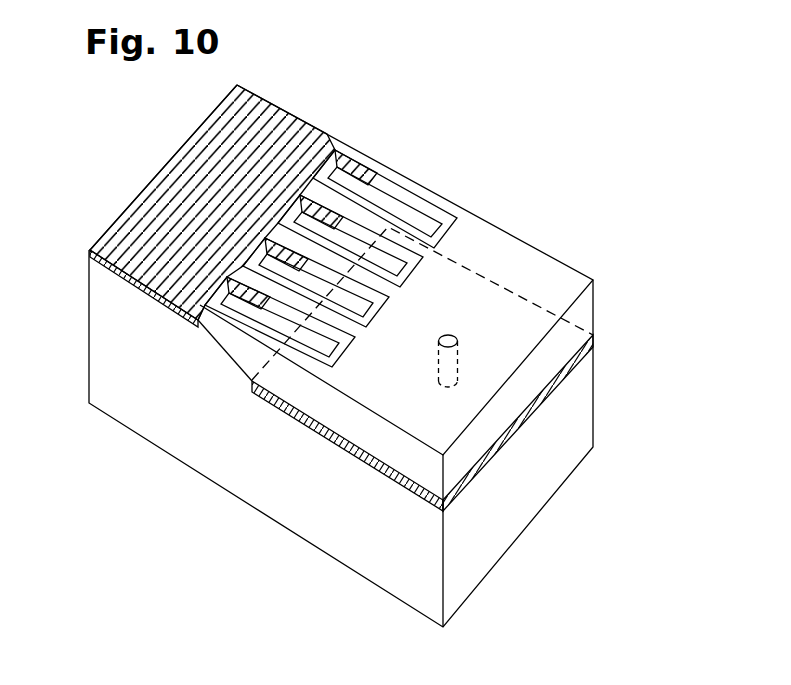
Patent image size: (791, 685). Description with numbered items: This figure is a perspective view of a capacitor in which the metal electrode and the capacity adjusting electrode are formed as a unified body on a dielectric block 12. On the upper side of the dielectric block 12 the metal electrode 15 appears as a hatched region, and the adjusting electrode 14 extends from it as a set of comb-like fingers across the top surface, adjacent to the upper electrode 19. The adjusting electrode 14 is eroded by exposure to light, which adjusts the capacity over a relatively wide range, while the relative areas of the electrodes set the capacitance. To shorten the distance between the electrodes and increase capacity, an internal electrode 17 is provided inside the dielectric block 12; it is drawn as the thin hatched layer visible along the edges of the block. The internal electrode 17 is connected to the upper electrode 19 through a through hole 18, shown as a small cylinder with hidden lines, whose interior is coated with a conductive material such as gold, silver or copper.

The dielectric block 12 is at (180, 387).
The adjusting electrode 14 is at (402, 202).
The metal electrode 15 is at (203, 178).
The internal electrode 17 is at (307, 430).
The through hole 18 is at (457, 353).
The upper electrode 19 is at (525, 268).